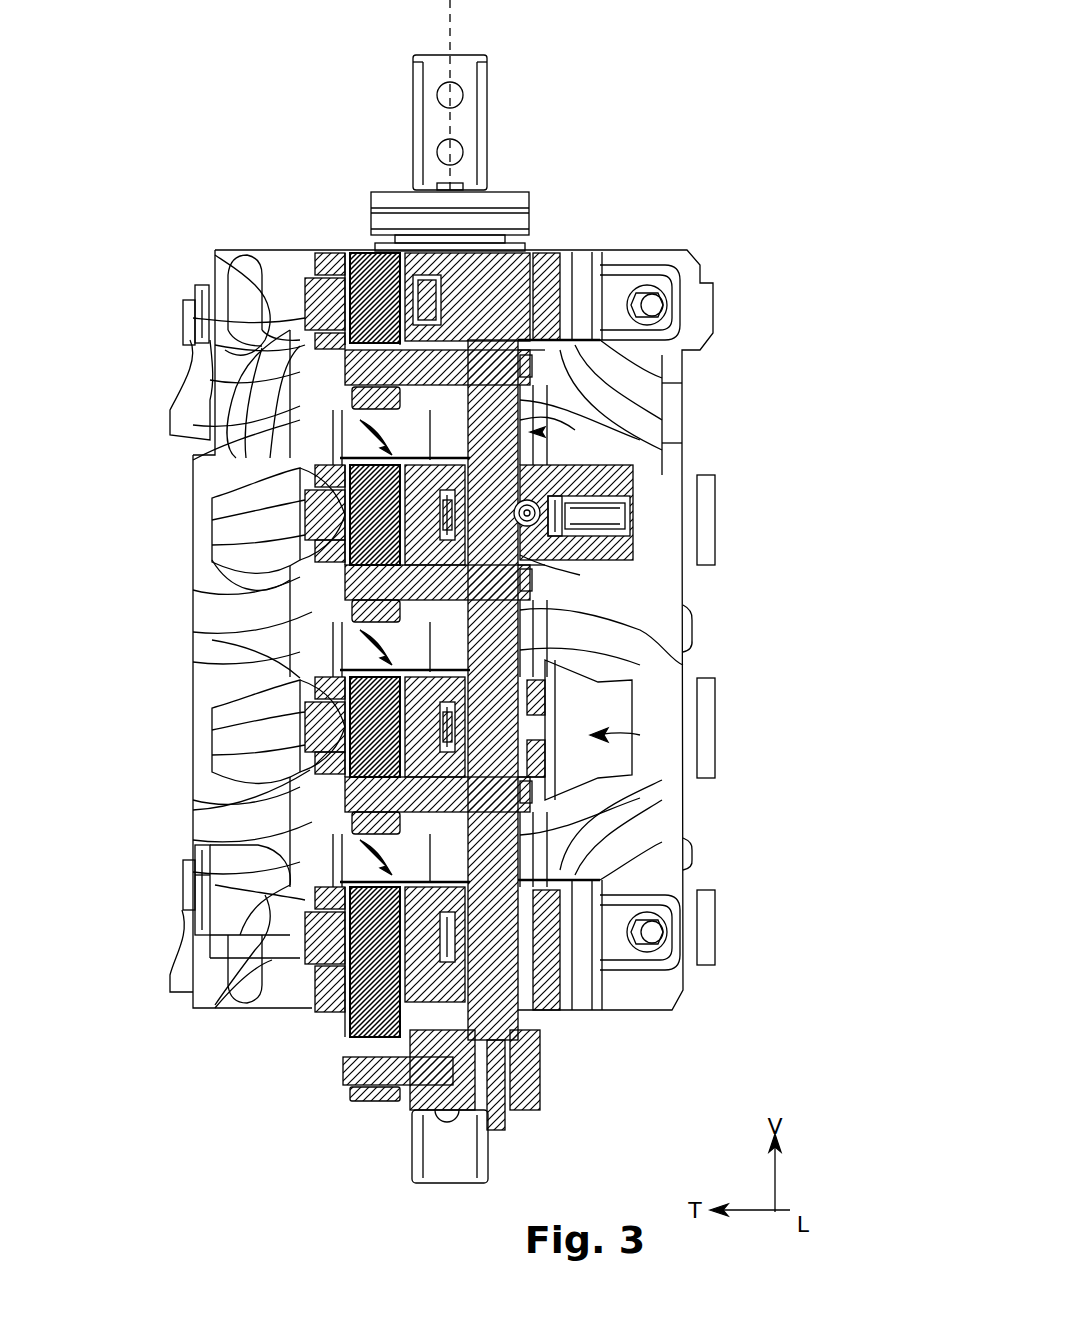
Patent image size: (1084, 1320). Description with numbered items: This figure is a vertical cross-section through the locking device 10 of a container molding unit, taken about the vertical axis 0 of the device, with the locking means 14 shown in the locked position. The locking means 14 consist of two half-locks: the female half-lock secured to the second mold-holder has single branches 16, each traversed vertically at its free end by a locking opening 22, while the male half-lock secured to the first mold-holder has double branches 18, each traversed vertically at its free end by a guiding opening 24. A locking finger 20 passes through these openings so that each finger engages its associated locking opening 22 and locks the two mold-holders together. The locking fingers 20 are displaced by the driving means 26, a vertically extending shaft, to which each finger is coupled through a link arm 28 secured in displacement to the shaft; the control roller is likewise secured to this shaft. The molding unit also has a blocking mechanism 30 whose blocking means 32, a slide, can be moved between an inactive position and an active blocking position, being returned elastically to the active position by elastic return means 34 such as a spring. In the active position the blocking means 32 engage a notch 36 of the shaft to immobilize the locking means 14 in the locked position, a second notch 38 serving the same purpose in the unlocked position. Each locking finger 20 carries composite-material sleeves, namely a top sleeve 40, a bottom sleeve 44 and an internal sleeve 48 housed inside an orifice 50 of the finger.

The axis of rotation 0 is at (452, 2).
The locking device 10 is at (640, 730).
The locking means 14 is at (195, 608).
The single branches 16 is at (235, 515).
The double branches 18 is at (240, 480).
The locking finger 20 is at (310, 305).
The locking opening 22 is at (250, 530).
The guiding opening 24 is at (210, 420).
The driving means 26 is at (620, 650).
The link arm 28 is at (543, 313).
The blocking mechanism 30 is at (700, 547).
The blocking means 32 is at (545, 490).
The elastic return means 34 is at (610, 515).
The notch 36 is at (600, 540).
The notch 38 is at (580, 430).
The top sleeve 40 is at (358, 256).
The bottom sleeve 44 is at (250, 375).
The internal sleeve 48 is at (245, 310).
The orifice 50 is at (452, 300).